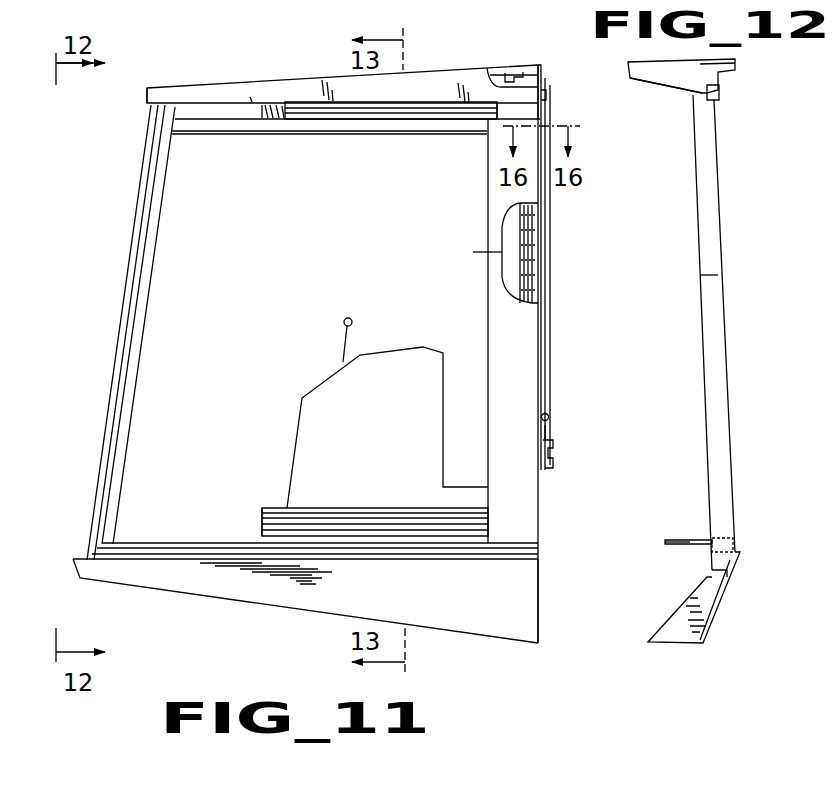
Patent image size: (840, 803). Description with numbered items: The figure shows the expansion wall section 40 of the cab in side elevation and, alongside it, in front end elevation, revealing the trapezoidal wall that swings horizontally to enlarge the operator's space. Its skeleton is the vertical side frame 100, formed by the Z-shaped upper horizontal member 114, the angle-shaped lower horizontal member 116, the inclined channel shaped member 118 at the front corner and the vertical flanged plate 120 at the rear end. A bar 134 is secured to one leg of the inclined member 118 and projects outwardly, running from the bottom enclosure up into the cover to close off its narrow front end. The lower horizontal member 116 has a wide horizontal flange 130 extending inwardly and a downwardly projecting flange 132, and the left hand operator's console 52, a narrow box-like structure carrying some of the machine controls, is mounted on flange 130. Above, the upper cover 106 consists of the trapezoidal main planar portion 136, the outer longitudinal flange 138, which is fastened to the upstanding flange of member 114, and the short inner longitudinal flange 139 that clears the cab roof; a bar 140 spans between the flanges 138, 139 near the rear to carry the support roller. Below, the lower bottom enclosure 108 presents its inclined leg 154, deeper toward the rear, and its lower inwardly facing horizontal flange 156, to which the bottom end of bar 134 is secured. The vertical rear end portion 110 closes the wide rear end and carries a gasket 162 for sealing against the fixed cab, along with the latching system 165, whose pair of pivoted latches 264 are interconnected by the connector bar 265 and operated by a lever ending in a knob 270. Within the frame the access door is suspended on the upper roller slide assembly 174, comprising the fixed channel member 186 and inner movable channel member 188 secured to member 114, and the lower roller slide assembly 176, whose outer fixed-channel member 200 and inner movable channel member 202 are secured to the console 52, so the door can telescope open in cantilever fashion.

In FIG. 11, the expansion wall section 40 is at (254, 78).
In FIG. 12, the expansion wall section 40 is at (724, 182).
In FIG. 11, the left hand operator's console 52 is at (392, 412).
In FIG. 11, the vertical side frame 100 is at (140, 182).
In FIG. 12, the vertical side frame 100 is at (724, 232).
In FIG. 12, the upper cover 106 is at (718, 76).
In FIG. 11, the lower bottom enclosure 108 is at (533, 592).
In FIG. 12, the lower bottom enclosure 108 is at (718, 588).
In FIG. 11, the vertical rear end portion 110 is at (520, 252).
In FIG. 11, the upper horizontal member 114 is at (214, 124).
In FIG. 11, the lower horizontal member 116 is at (140, 545).
In FIG. 12, the lower horizontal member 116 is at (696, 540).
In FIG. 11, the inclined channel shaped member 118 is at (155, 247).
In FIG. 11, the vertical flanged plate 120 is at (527, 337).
In FIG. 12, the horizontal flange 130 is at (686, 546).
In FIG. 12, the downwardly projecting flange 132 is at (735, 540).
In FIG. 11, the bar 134 is at (136, 245).
In FIG. 12, the bar 134 is at (720, 275).
In FIG. 11, the main planar portion 136 is at (496, 70).
In FIG. 12, the main planar portion 136 is at (710, 66).
In FIG. 11, the longitudinal flange 138 is at (147, 97).
In FIG. 12, the longitudinal flange 138 is at (720, 95).
In FIG. 12, the inner longitudinal flange 139 is at (682, 82).
In FIG. 11, the bar 140 is at (542, 72).
In FIG. 11, the inclined leg 154 is at (224, 586).
In FIG. 12, the lower inwardly facing horizontal flange 156 is at (668, 623).
In FIG. 11, the gasket 162 is at (473, 252).
In FIG. 11, the latching system 165 is at (549, 442).
In FIG. 11, the upper roller slide assembly 174 is at (482, 118).
In FIG. 11, the lower roller slide assembly 176 is at (266, 510).
In FIG. 11, the fixed channel member 186 is at (316, 124).
In FIG. 11, the inner movable channel member 188 is at (396, 122).
In FIG. 11, the outer fixed-channel member 200 is at (305, 515).
In FIG. 11, the inner movable channel member 202 is at (386, 526).
In FIG. 11, the pivoted latch 264 is at (548, 90).
In FIG. 11, the connector bar 265 is at (551, 288).
In FIG. 11, the knob 270 is at (549, 415).